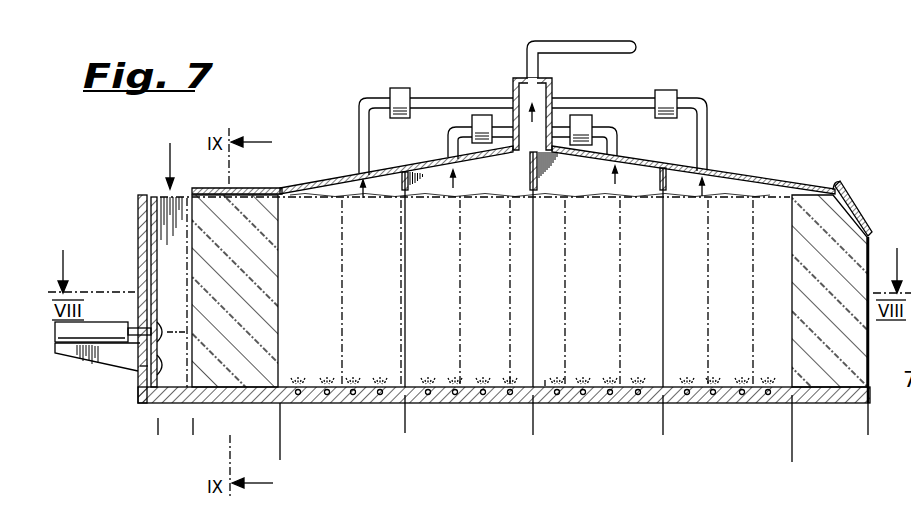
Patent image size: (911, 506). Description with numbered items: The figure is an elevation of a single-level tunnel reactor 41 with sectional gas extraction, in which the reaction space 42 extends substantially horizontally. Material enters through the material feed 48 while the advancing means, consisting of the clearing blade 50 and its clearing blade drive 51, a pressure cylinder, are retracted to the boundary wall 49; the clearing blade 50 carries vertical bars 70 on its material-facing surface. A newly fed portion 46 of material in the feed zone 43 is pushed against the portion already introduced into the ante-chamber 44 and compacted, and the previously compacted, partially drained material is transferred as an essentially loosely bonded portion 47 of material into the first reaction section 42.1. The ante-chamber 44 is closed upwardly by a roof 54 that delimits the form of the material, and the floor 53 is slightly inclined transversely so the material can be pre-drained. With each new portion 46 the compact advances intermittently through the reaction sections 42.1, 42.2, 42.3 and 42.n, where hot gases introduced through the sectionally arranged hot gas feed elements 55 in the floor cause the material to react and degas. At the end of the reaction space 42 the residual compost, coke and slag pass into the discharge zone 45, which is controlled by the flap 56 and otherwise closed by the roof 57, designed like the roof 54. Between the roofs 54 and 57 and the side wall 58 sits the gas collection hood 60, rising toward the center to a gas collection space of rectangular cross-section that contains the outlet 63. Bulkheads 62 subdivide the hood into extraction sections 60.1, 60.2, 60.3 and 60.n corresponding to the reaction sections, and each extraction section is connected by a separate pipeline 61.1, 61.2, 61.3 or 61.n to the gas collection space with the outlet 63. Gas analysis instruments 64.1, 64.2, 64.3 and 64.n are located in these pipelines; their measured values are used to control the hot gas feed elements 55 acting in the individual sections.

The tunnel reactor 41 is at (473, 463).
The reaction space 42 is at (792, 453).
The first reaction section 42.1 is at (405, 427).
The second reaction section 42.2 is at (533, 427).
The third reaction section 42.3 is at (663, 427).
The nth reaction section 42.n is at (792, 427).
The feed zone 43 is at (140, 427).
The ante-chamber 44 is at (280, 427).
The discharge zone 45 is at (868, 427).
The portion of material 46 is at (183, 306).
The bonded portion of material 47 is at (250, 308).
The material feed 48 is at (170, 156).
The boundary wall 49 is at (138, 214).
The clearing blade 50 is at (151, 251).
The clearing blade drive 51 is at (55, 330).
The floor 53 is at (545, 385).
The roof 54 is at (250, 188).
The hot gas feed elements 55 is at (380, 386).
The flap 56 is at (862, 213).
The roof 57 is at (833, 186).
The side wall 58 is at (583, 494).
The gas collection hood 60 is at (318, 186).
The first extraction section 60.1 is at (346, 198).
The second extraction section 60.2 is at (473, 198).
The third extraction section 60.3 is at (583, 198).
The nth extraction section 60.n is at (720, 198).
The first pipeline 61.1 is at (359, 122).
The second pipeline 61.2 is at (448, 137).
The third pipeline 61.3 is at (617, 140).
The nth pipeline 61.n is at (707, 128).
The bulkheads 62 is at (405, 190).
The outlet 63 is at (530, 78).
The first gas analysis instrument 64.1 is at (397, 88).
The second gas analysis instrument 64.2 is at (481, 115).
The third gas analysis instrument 64.3 is at (583, 115).
The nth gas analysis instrument 64.n is at (672, 90).
The vertical bars 70 is at (140, 366).